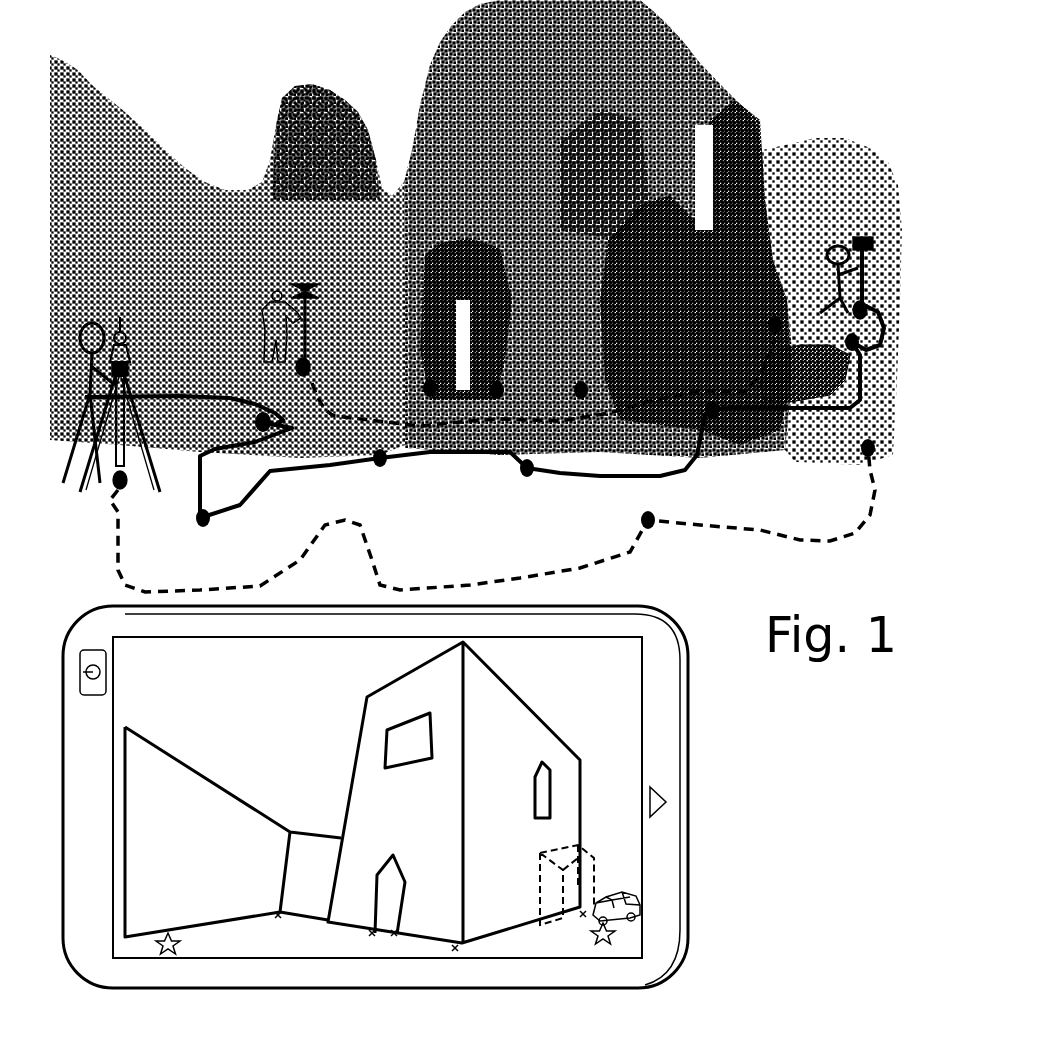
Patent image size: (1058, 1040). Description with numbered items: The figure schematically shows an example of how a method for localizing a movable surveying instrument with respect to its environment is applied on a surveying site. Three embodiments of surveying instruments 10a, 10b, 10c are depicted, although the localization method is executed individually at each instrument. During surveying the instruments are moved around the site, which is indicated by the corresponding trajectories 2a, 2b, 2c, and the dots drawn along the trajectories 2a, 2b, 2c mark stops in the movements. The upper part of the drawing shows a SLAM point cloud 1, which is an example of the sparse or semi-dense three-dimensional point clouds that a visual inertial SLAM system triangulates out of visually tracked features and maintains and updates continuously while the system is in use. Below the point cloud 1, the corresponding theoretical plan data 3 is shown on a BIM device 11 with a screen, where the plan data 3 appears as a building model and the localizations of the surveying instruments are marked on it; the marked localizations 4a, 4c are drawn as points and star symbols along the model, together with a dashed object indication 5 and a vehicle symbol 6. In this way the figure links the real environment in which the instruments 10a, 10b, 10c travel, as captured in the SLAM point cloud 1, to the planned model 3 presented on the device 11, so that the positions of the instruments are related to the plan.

The SLAM point cloud 1 is at (730, 43).
The trajectory 2a is at (740, 395).
The trajectory 2b is at (700, 460).
The trajectory 2c is at (740, 527).
The surveying instrument 10a is at (305, 372).
The surveying instrument 10b is at (862, 240).
The surveying instrument 10c is at (125, 477).
The display device / tablet 11 is at (677, 914).
The theoretical plan data 3 is at (606, 750).
The measured object indication (dashed box) 5 is at (600, 868).
The vehicle symbol 6 is at (633, 905).
The measured points 4a is at (278, 916).
The station points (stars) 4c is at (172, 950).